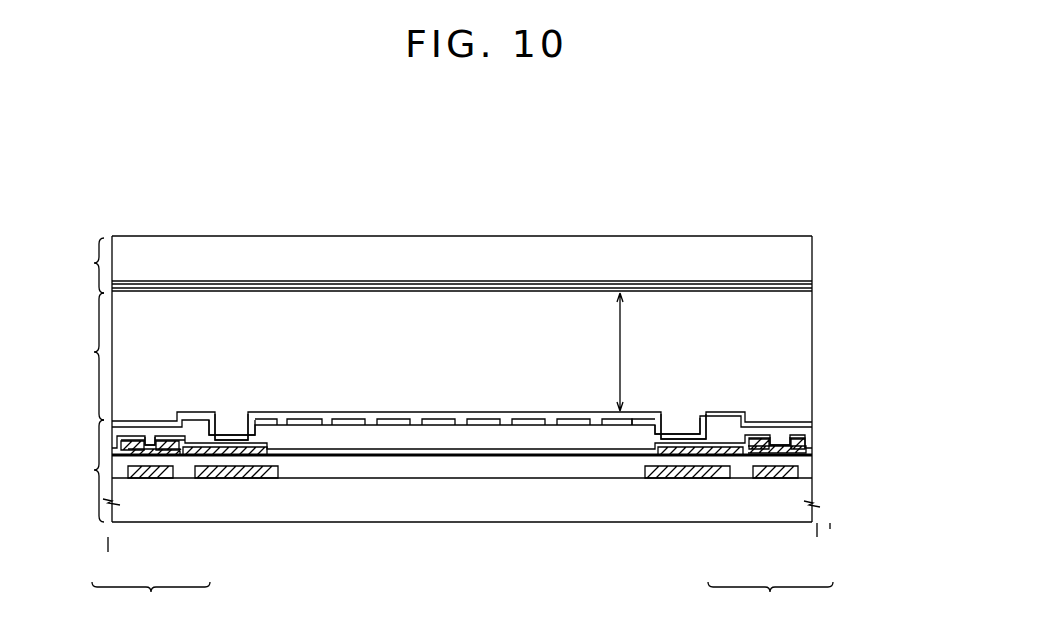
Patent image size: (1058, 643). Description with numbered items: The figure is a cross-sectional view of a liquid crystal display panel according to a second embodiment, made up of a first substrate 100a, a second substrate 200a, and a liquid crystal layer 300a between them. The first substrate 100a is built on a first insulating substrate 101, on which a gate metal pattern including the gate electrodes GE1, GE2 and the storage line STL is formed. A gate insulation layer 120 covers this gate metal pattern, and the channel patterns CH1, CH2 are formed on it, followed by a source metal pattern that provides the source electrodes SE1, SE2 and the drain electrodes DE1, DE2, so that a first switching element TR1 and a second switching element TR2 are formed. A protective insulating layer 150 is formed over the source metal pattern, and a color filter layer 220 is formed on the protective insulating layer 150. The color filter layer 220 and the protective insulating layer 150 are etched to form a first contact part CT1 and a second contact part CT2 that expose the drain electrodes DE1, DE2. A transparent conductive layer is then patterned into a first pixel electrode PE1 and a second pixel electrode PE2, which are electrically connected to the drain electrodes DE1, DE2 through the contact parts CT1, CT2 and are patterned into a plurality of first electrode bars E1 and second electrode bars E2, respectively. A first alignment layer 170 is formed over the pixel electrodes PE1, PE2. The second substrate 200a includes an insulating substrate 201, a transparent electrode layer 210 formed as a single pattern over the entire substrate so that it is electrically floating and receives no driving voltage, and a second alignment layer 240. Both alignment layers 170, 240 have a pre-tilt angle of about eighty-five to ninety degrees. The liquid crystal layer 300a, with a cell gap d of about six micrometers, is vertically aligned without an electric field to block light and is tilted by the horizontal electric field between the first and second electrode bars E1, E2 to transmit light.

The insulating substrate 201 is at (813, 238).
The transparent electrode layer 210 is at (813, 282).
The second alignment layer 240 is at (813, 289).
The second substrate 200a is at (70, 265).
The liquid crystal layer 300a is at (70, 356).
The first substrate 100a is at (70, 471).
The first alignment layer 170 is at (812, 423).
The protective insulating layer 150 is at (812, 441).
The gate insulation layer 120 is at (812, 473).
The first insulating substrate 101 is at (812, 496).
The color filter layer 220 is at (510, 440).
The channel pattern CH1 is at (147, 440).
The first contact part CT1 is at (232, 418).
The first pixel electrode PE1 is at (266, 416).
The first electrode bars E1 is at (437, 412).
The second electrode bars E2 is at (483, 412).
The cell gap d is at (607, 352).
The second contact part CT2 is at (692, 418).
The second pixel electrode PE2 is at (733, 416).
The channel pattern CH2 is at (782, 440).
The source electrode SE1 is at (118, 452).
The gate electrode GE1 is at (150, 478).
The drain electrode DE1 is at (181, 452).
The storage line STL is at (230, 478).
The drain electrode DE2 is at (740, 452).
The gate electrode GE2 is at (769, 478).
The source electrode SE2 is at (801, 452).
The first switching element TR1 is at (151, 601).
The second switching element TR2 is at (770, 601).